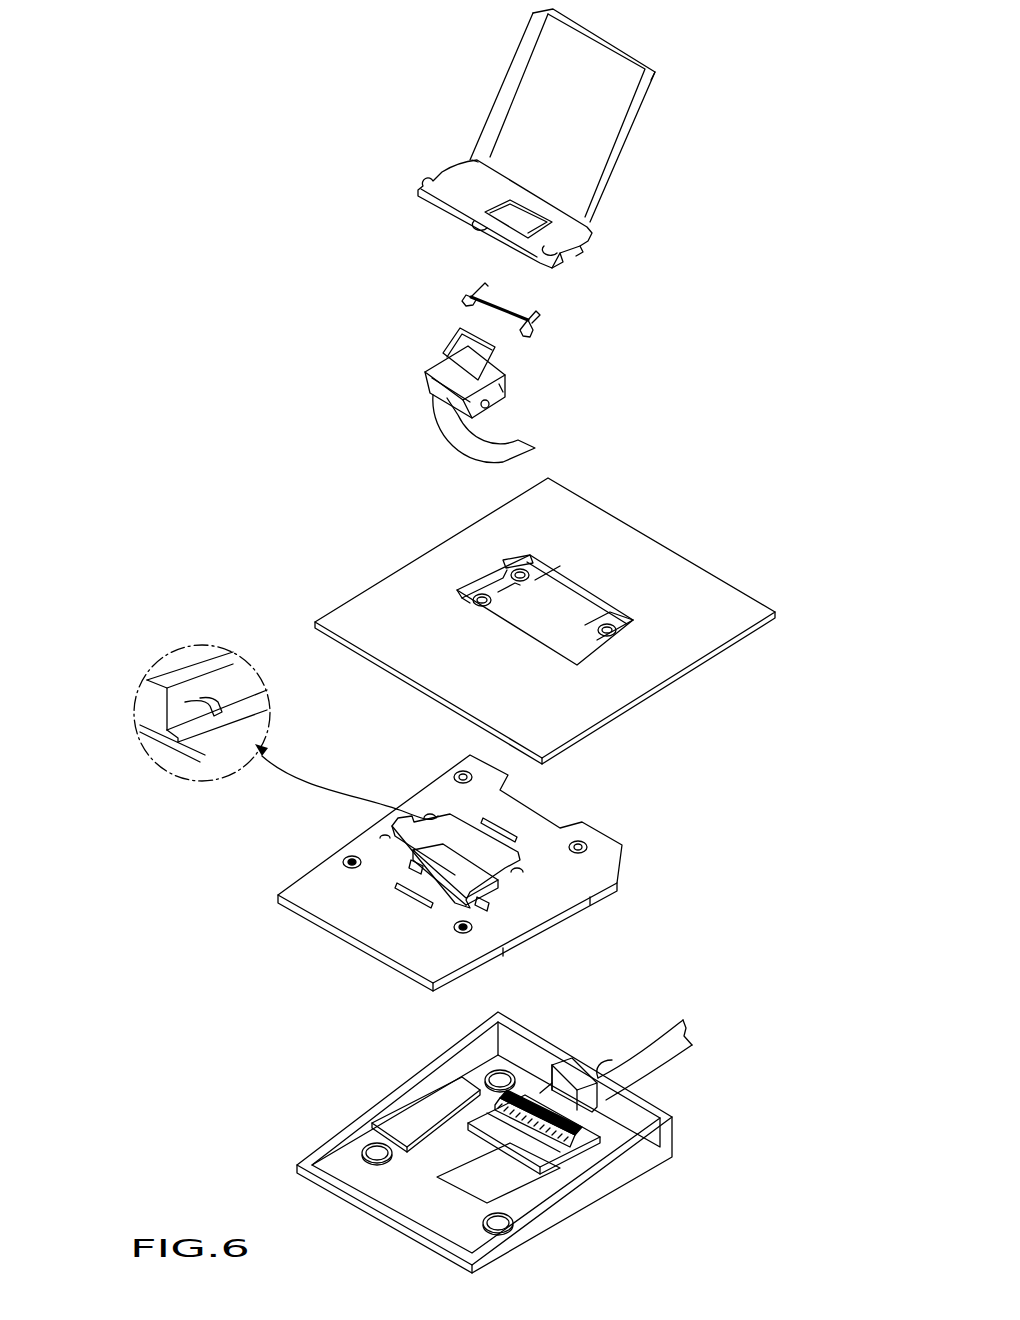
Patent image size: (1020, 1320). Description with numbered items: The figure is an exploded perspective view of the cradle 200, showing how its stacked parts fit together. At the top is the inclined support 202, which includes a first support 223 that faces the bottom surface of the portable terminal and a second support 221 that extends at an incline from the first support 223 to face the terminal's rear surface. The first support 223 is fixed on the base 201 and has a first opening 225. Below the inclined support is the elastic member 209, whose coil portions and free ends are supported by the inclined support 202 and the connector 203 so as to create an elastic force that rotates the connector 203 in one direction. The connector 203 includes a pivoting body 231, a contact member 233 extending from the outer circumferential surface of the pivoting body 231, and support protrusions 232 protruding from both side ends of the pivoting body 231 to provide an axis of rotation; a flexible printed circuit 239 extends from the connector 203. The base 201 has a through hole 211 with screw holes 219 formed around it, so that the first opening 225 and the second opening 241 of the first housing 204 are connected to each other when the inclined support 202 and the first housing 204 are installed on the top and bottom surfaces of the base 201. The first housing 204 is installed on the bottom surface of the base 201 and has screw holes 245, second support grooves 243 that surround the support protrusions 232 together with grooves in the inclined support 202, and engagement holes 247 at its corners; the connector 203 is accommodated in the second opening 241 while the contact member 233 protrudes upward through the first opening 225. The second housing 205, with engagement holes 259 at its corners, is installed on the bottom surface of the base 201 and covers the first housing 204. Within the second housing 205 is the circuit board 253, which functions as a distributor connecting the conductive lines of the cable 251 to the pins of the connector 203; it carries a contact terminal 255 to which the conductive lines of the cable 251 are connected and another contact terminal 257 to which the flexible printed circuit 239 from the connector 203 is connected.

The cradle 200 is at (292, 84).
The base 201 is at (565, 619).
The inclined support 202 is at (534, 138).
The connector 203 is at (487, 395).
The first housing 204 is at (390, 828).
The second housing 205 is at (520, 1136).
The elastic member 209 is at (500, 312).
The through hole 211 is at (563, 603).
The screw holes 219 is at (520, 575).
The second support 221 is at (527, 92).
The first support 223 is at (452, 197).
The first opening 225 is at (508, 212).
The pivoting body 231 is at (427, 371).
The support protrusions 232 is at (490, 405).
The contact member 233 is at (470, 353).
The Flexible Printed Circuit 239 is at (520, 448).
The second opening 241 is at (463, 880).
The second support grooves 243 is at (190, 703).
The screw holes 245 is at (430, 820).
The engagement holes 247 is at (463, 777).
The cable 251 is at (650, 1048).
The circuit board 253 is at (567, 1150).
The contact terminal 255 is at (600, 1137).
The contact terminal 257 is at (476, 1097).
The engagement holes 259 is at (500, 1080).